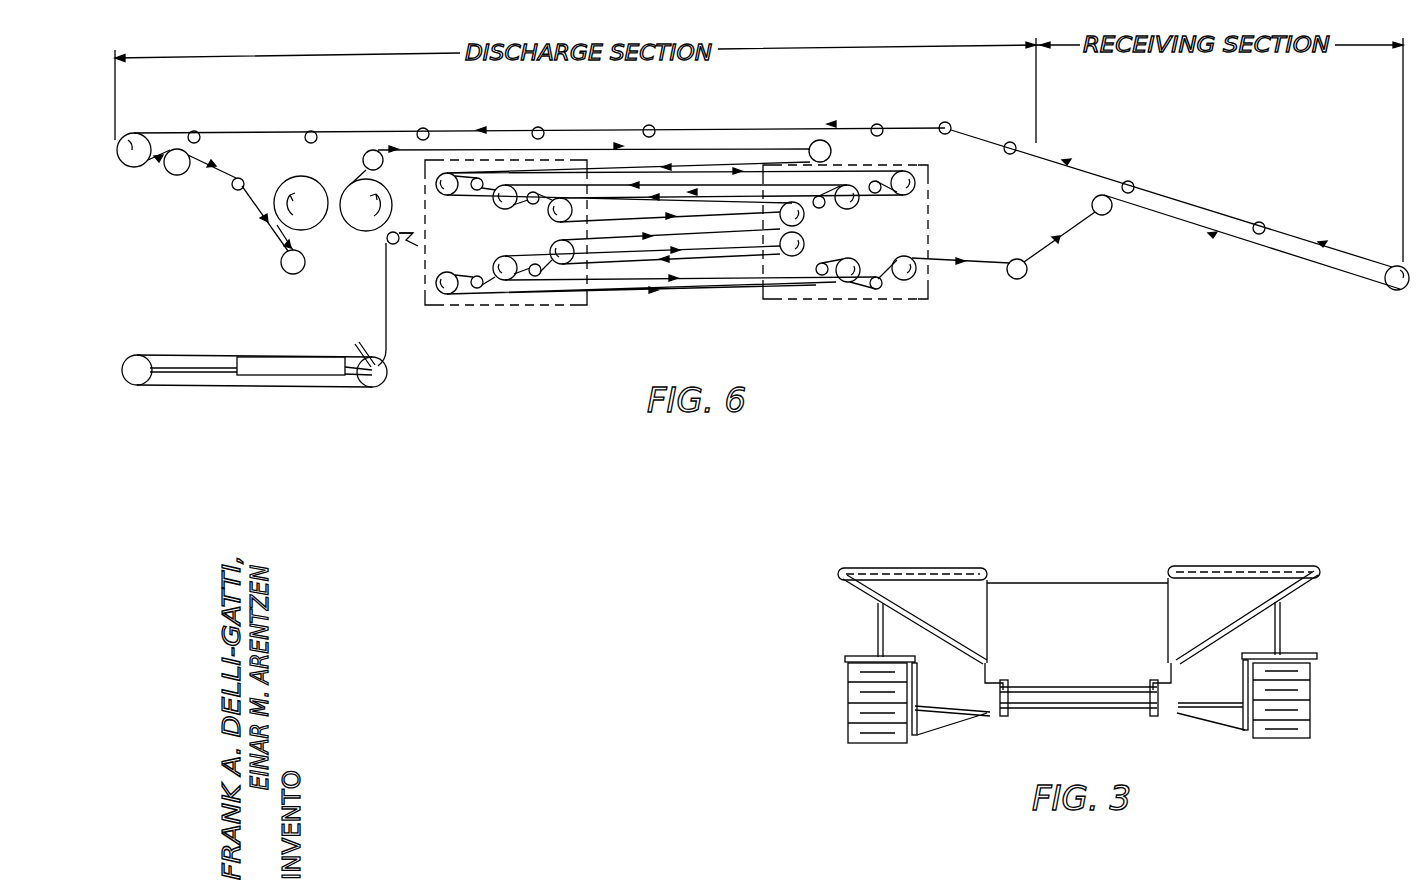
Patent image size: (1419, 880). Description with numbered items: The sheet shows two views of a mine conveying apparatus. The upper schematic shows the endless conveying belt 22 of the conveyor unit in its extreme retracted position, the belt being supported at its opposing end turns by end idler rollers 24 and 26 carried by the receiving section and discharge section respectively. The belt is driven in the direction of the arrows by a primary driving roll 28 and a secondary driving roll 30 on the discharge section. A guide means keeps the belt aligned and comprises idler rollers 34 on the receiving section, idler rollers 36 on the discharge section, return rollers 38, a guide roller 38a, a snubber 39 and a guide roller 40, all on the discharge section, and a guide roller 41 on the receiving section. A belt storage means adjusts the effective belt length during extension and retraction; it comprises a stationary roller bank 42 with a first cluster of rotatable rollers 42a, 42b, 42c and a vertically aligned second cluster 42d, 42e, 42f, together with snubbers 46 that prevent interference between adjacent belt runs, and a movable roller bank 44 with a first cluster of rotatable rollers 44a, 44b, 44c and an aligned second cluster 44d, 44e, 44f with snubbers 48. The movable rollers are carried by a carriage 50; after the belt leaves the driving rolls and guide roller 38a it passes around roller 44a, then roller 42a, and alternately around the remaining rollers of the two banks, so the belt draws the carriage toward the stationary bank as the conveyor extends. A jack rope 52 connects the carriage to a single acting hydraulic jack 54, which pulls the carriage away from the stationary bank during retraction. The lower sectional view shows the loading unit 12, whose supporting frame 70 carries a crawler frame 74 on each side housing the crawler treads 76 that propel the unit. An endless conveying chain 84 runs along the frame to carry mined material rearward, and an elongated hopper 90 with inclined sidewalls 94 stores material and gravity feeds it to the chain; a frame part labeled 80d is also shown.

In FIG. 3, the loading unit 12 is at (1056, 556).
In FIG. 6, the endless conveying belt 22 is at (222, 133).
In FIG. 6, the end idler roller 24 is at (1397, 290).
In FIG. 6, the end idler roller 26 is at (134, 140).
In FIG. 6, the primary driving roll 28 is at (301, 188).
In FIG. 6, the secondary driving roll 30 is at (358, 188).
In FIG. 6, the idler rollers 34 is at (1128, 181).
In FIG. 6, the idler rollers 36 is at (194, 131).
In FIG. 6, the return rollers 38 is at (177, 175).
In FIG. 6, the guide roller 38a is at (818, 140).
In FIG. 6, the snubber 39 is at (234, 188).
In FIG. 6, the guide roller 40 is at (1017, 279).
In FIG. 6, the guide roller 41 is at (1102, 215).
In FIG. 6, the stationary roller bank 42 is at (933, 223).
In FIG. 6, the rotatable roller 42a is at (903, 171).
In FIG. 6, the rotatable roller 42b is at (847, 185).
In FIG. 6, the rotatable roller 42c is at (792, 202).
In FIG. 6, the rotatable roller 42d is at (792, 256).
In FIG. 6, the rotatable roller 42e is at (848, 282).
In FIG. 6, the rotatable roller 42f is at (904, 280).
In FIG. 6, the movable roller bank 44 is at (543, 307).
In FIG. 6, the rotatable roller 44a is at (447, 173).
In FIG. 6, the rotatable roller 44b is at (504, 185).
In FIG. 6, the rotatable roller 44c is at (560, 198).
In FIG. 6, the rotatable roller 44d is at (444, 294).
In FIG. 6, the rotatable roller 44e is at (503, 280).
In FIG. 6, the rotatable roller 44f is at (565, 264).
In FIG. 6, the snubbers 46 is at (822, 263).
In FIG. 6, the snubbers 48 is at (479, 190).
In FIG. 6, the movable carriage 50 is at (462, 246).
In FIG. 6, the jack rope 52 is at (386, 300).
In FIG. 6, the single acting hydraulic jack 54 is at (295, 375).
In FIG. 3, the supporting frame 70 is at (878, 628).
In FIG. 3, the crawler frame 74 is at (845, 658).
In FIG. 3, the crawler treads 76 is at (880, 728).
In FIG. 3, the frame bracket 80d is at (940, 651).
In FIG. 3, the endless conveying chain 84 is at (1062, 690).
In FIG. 3, the hopper 90 is at (1029, 608).
In FIG. 3, the sidewalls 94 is at (898, 605).